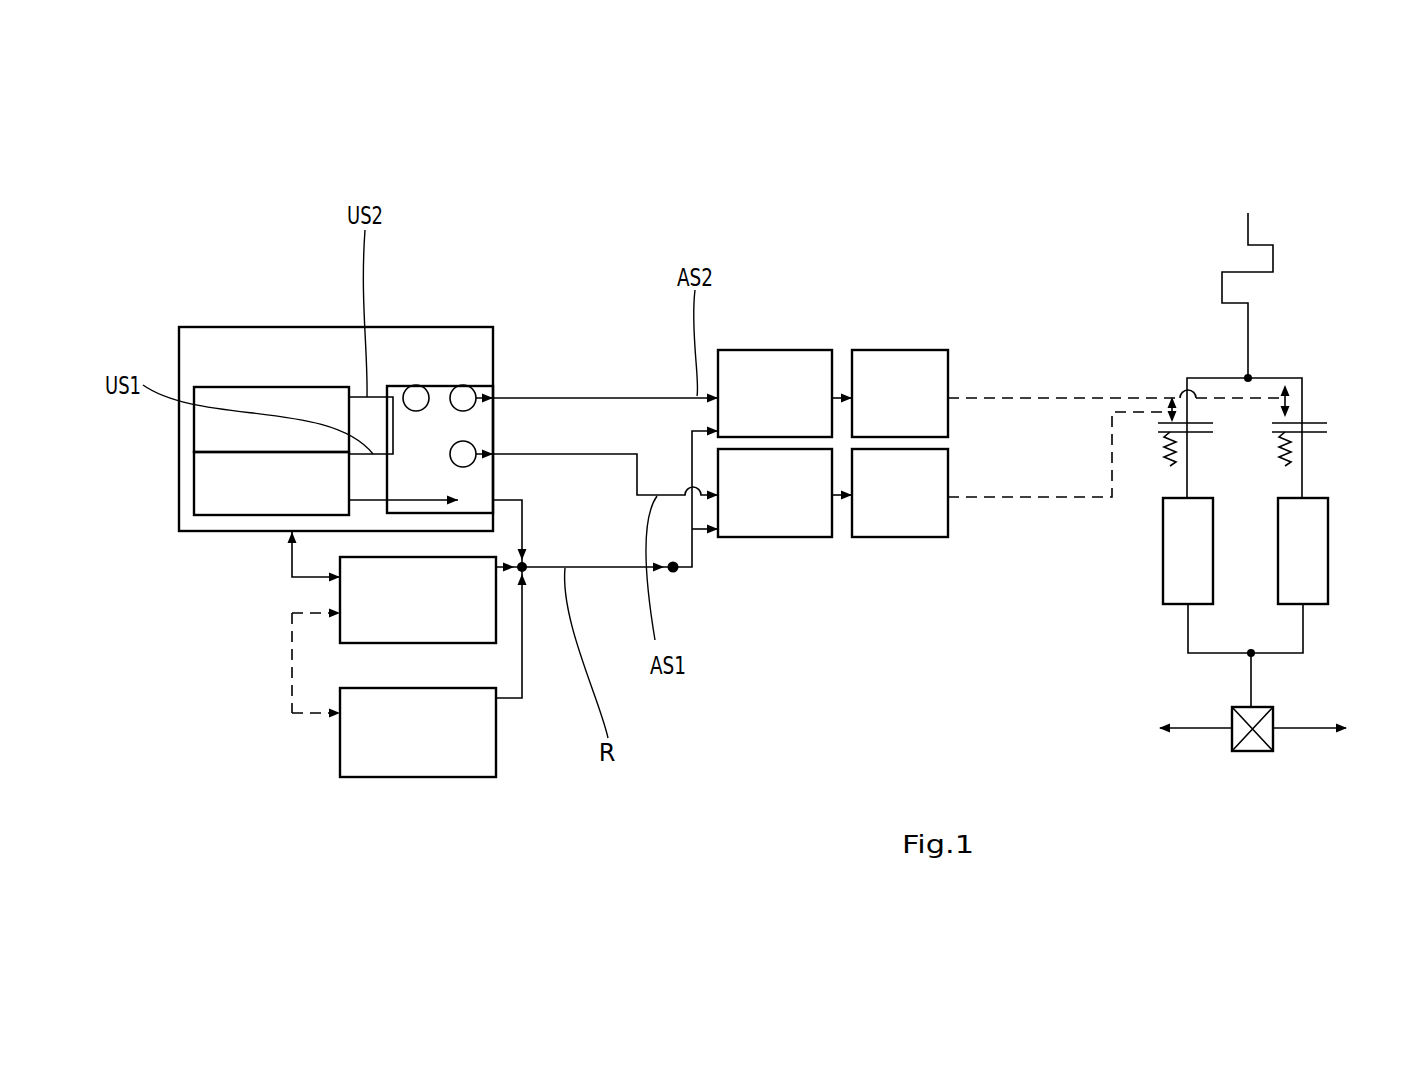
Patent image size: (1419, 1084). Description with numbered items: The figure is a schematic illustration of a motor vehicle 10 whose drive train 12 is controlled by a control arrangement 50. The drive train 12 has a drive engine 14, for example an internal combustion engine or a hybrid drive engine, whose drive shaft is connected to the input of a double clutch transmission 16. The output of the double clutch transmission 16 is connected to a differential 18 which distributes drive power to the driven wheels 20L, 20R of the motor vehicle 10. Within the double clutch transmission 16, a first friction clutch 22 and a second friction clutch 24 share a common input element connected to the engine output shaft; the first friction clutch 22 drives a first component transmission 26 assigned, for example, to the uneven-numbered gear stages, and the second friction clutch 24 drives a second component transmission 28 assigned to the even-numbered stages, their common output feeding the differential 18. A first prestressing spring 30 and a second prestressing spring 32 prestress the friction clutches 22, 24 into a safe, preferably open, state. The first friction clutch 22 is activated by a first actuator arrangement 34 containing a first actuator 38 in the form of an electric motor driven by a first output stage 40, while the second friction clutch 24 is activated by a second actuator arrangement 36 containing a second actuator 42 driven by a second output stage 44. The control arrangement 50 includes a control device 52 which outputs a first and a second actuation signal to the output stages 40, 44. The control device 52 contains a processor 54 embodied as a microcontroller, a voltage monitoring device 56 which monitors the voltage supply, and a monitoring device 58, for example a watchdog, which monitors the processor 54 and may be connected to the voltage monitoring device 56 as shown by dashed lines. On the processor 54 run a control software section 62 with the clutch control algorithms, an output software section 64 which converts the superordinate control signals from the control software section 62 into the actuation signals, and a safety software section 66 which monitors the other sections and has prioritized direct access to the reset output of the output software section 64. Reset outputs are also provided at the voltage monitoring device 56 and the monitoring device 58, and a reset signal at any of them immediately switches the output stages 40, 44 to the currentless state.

The motor vehicle 10 is at (1348, 278).
The drive train 12 is at (1348, 347).
The drive engine 14 is at (1222, 287).
The double clutch transmission 16 is at (1362, 428).
The differential 18 is at (1253, 752).
The driven wheel 20L is at (1208, 730).
The driven wheel 20R is at (1295, 730).
The first friction clutch 22 is at (1205, 433).
The second friction clutch 24 is at (1317, 433).
The first component transmission 26 is at (1177, 577).
The second component transmission 28 is at (1318, 568).
The first prestressing spring 30 is at (1163, 443).
The second prestressing spring 32 is at (1288, 463).
The first actuator arrangement 34 is at (860, 560).
The second actuator arrangement 36 is at (873, 318).
The first actuator 38 is at (915, 512).
The first output stage 40 is at (805, 518).
The second actuator 42 is at (924, 370).
The second output stage 44 is at (788, 368).
The control arrangement 50 is at (630, 249).
The control device 52 is at (430, 287).
The processor 54 is at (317, 325).
The voltage monitoring device 56 is at (388, 778).
The monitoring device 58 is at (397, 627).
The control software section 62 is at (198, 432).
The output software section 64 is at (443, 388).
The safety software section 66 is at (232, 492).